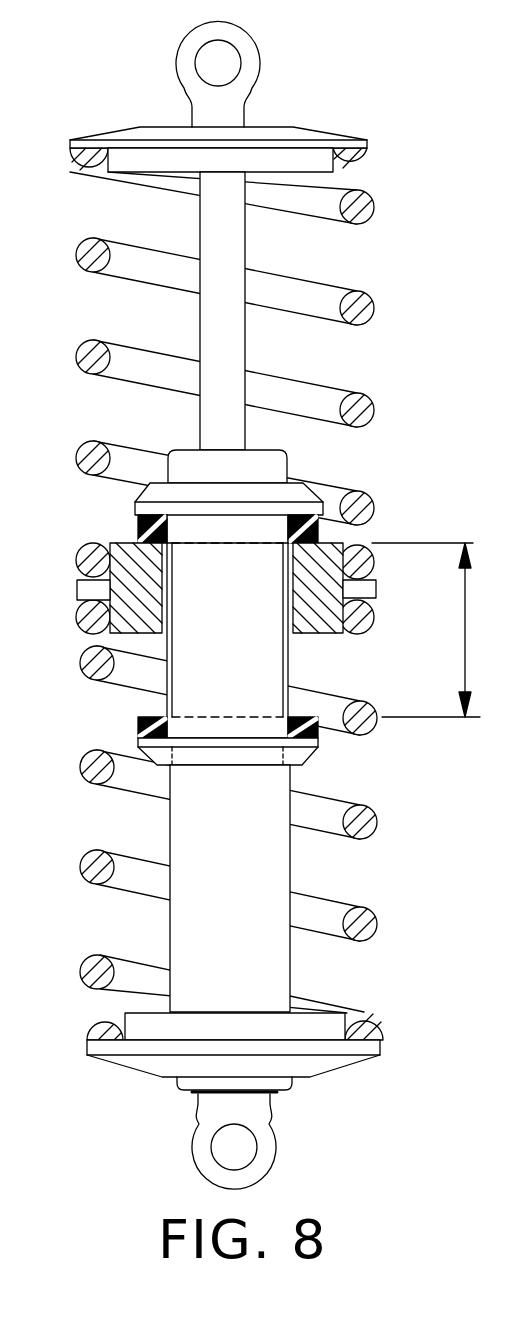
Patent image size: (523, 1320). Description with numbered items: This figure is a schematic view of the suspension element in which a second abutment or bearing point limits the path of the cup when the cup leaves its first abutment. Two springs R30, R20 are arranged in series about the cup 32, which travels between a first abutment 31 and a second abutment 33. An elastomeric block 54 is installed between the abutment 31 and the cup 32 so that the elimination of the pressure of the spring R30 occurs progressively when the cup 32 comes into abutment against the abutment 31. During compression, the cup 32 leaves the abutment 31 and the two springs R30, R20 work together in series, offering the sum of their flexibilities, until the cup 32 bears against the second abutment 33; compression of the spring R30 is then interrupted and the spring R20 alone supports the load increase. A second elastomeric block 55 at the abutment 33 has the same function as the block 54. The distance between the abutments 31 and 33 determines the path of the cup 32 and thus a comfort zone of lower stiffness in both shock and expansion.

The spring R20 is at (357, 308).
The spring R30 is at (365, 925).
The abutment 31 is at (135, 513).
The elastomeric block 54 is at (136, 535).
The cup 32 is at (78, 585).
The elastomeric block 55 is at (138, 730).
The second abutment 33 is at (148, 758).